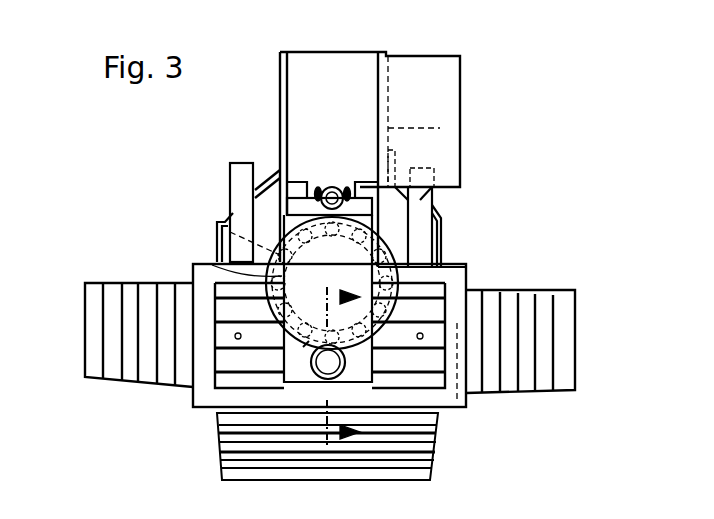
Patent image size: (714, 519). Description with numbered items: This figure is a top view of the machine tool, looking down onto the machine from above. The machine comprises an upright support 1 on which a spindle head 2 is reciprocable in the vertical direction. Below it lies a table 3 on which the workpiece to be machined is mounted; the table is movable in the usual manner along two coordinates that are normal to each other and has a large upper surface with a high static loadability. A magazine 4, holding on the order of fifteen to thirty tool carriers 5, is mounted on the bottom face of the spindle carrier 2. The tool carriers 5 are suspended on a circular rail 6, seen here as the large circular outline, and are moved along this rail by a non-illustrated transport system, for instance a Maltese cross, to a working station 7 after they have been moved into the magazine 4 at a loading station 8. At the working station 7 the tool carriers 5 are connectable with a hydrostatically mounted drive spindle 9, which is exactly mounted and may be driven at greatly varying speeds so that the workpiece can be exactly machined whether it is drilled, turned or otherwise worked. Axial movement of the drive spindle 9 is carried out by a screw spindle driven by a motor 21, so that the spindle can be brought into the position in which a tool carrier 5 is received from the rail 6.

The upright support 1 is at (308, 86).
The spindle head 2 is at (215, 262).
The table 3 is at (466, 280).
The magazine 4 is at (388, 242).
The tool carriers 5 is at (430, 128).
The circular rail 6 is at (222, 218).
The working station 7 is at (303, 347).
The loading station 8 is at (452, 268).
The drive spindle 9 is at (312, 355).
The motor 21 is at (345, 362).